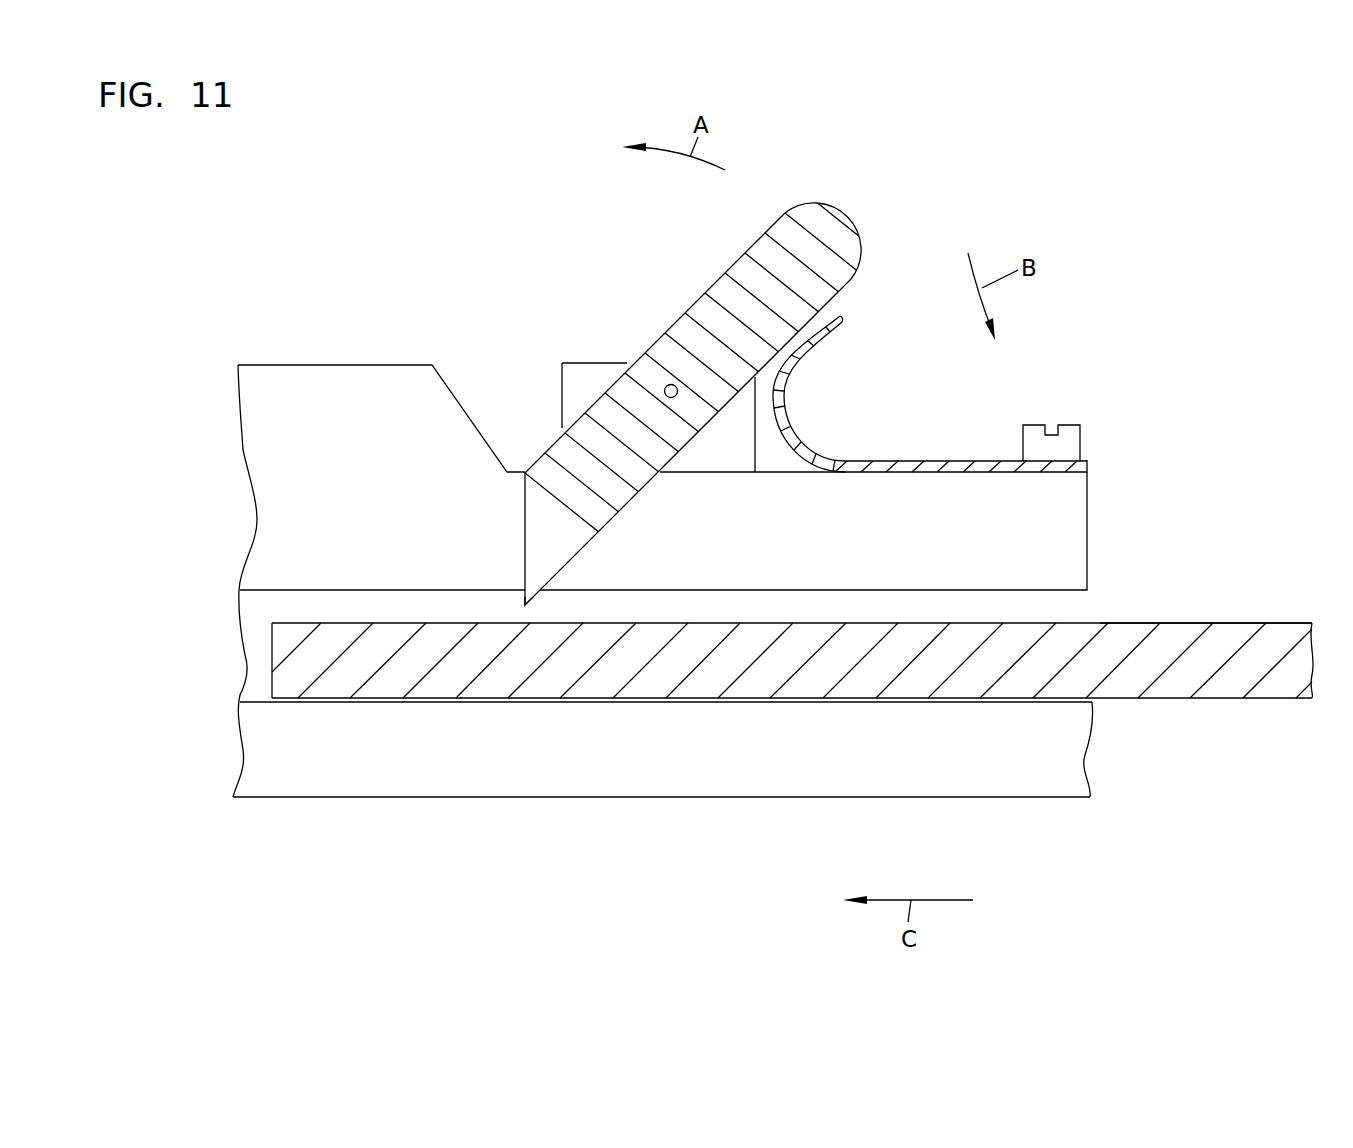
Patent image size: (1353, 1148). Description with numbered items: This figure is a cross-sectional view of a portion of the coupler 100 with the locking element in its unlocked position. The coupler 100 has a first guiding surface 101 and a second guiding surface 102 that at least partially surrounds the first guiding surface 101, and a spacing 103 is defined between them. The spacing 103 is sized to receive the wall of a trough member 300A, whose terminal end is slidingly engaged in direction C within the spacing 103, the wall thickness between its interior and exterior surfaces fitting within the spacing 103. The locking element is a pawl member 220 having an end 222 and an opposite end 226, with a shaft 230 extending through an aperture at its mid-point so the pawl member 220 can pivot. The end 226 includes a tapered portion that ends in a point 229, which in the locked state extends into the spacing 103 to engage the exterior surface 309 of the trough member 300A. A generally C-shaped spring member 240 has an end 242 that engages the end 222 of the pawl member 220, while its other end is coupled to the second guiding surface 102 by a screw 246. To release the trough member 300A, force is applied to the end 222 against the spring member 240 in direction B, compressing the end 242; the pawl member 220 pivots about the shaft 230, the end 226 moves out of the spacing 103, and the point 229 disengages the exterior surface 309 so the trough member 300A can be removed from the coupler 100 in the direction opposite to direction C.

The coupler 100 is at (270, 423).
The first guiding surface 101 is at (1050, 748).
The second guiding surface 102 is at (1058, 522).
The spacing 103 is at (285, 602).
The pawl member 220 is at (811, 202).
The end of pawl member 222 is at (862, 237).
The end of pawl member 226 is at (558, 547).
The point 229 is at (527, 607).
The shaft 230 is at (667, 385).
The spring member 240 is at (787, 390).
The end of spring member 242 is at (844, 320).
The screw 246 is at (1065, 440).
The trough member 300A is at (747, 662).
The exterior surface 309 is at (1176, 612).